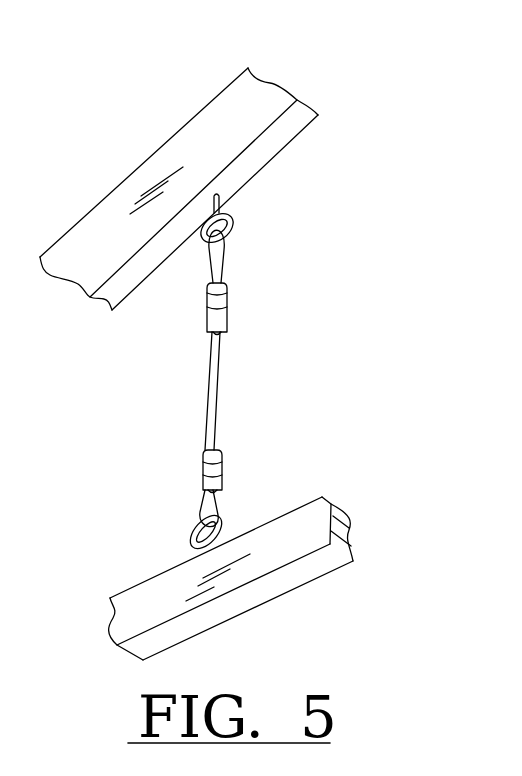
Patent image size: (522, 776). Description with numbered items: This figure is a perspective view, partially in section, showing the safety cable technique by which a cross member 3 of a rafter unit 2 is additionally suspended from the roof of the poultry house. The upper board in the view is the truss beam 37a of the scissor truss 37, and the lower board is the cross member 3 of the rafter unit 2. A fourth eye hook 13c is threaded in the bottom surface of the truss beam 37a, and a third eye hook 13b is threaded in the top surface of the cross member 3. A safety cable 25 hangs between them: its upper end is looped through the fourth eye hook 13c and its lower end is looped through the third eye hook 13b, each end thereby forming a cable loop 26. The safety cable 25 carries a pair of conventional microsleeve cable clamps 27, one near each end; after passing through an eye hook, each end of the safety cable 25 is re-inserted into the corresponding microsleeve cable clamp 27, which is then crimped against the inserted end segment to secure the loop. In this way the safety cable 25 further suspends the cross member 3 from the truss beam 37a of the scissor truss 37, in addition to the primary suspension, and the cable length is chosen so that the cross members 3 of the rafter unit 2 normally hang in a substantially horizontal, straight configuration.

The rafter unit 2 is at (252, 593).
The cross member 3 is at (257, 595).
The third eye hook 13b is at (193, 535).
The fourth eye hook 13c is at (232, 220).
The safety cable 25 is at (210, 388).
The cable loop 26 is at (223, 262).
The microsleeve cable clamp 27 is at (227, 303).
The scissor truss 37 is at (179, 159).
The truss beam 37a is at (227, 107).